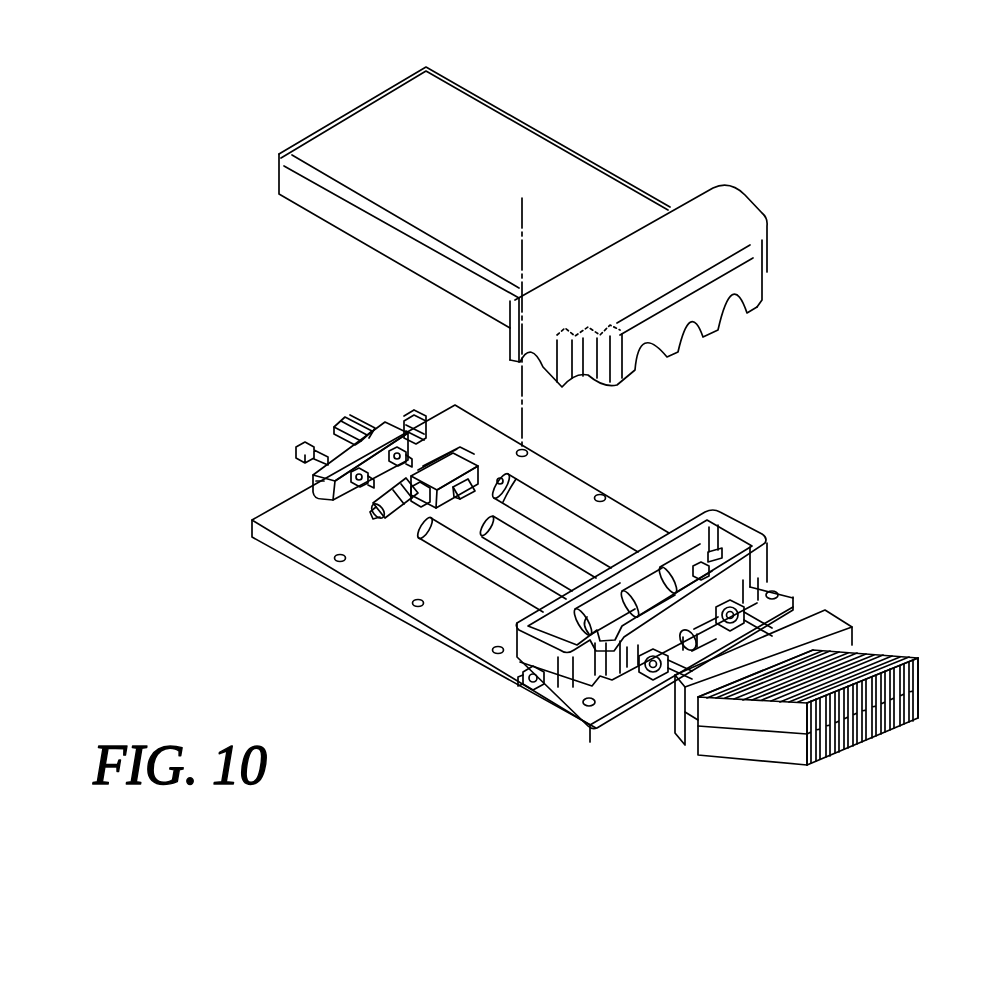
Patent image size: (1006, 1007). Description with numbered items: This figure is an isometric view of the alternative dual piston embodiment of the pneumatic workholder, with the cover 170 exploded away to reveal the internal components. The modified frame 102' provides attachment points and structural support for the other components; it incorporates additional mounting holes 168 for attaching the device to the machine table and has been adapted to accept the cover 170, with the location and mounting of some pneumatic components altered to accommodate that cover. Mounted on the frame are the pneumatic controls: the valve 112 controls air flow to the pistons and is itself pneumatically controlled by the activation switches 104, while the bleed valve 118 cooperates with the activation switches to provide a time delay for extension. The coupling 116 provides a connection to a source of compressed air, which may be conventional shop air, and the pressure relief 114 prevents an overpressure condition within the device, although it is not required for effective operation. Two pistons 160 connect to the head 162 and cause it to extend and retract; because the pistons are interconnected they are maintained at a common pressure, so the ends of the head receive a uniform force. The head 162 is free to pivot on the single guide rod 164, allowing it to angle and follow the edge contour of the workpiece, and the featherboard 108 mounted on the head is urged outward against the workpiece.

The cover 170 is at (625, 168).
The modified frame 102' is at (465, 573).
The pressure relief 114 is at (418, 410).
The coupling 116 is at (333, 415).
The bleed valve 118 is at (288, 440).
The valve 112 is at (385, 527).
The pistons 160 is at (617, 527).
The single guide rod 164 is at (533, 525).
The additional mounting holes 168 is at (785, 583).
The activation switches 104 is at (730, 542).
The head 162 is at (677, 745).
The featherboard 108 is at (857, 627).